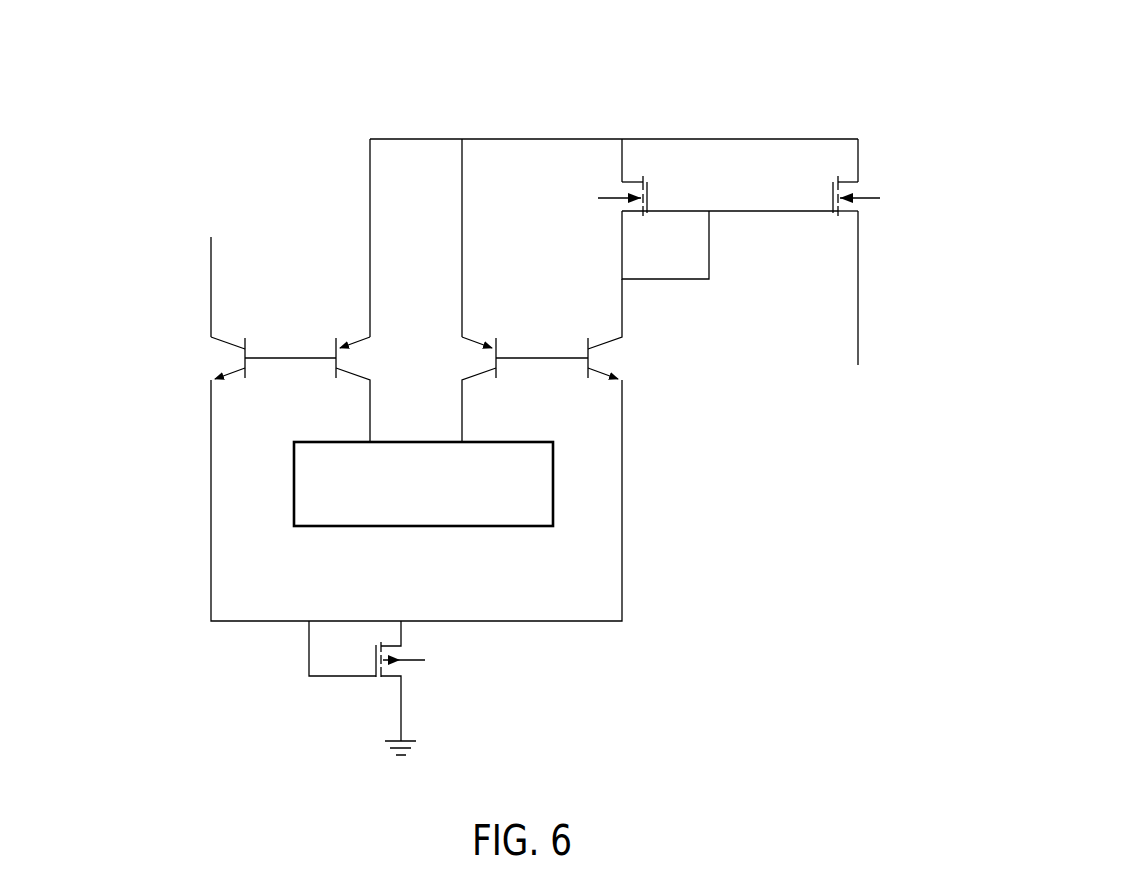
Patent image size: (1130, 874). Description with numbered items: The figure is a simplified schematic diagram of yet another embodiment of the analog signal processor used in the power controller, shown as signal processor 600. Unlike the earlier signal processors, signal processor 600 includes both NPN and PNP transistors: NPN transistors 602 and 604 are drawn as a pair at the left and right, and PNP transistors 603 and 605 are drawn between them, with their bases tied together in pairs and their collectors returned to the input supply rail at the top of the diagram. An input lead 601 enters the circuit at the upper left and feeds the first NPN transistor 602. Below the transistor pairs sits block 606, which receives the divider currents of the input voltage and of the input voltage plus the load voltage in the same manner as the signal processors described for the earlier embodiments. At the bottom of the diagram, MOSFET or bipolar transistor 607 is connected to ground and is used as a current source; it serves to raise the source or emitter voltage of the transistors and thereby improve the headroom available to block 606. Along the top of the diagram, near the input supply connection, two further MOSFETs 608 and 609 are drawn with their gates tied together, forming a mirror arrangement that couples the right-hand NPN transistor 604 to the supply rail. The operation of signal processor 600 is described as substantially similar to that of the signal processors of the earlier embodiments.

The signal processor 600 is at (1006, 59).
The input terminal 601 is at (186, 244).
The NPN transistor 602 is at (189, 367).
The PNP transistor 603 is at (319, 321).
The NPN transistor 604 is at (634, 357).
The PNP transistor 605 is at (502, 325).
The block 606 is at (248, 415).
The MOSFET or bipolar transistor 607 is at (442, 702).
The first current mirror MOSFET 608 is at (586, 217).
The second current mirror MOSFET 609 is at (892, 171).